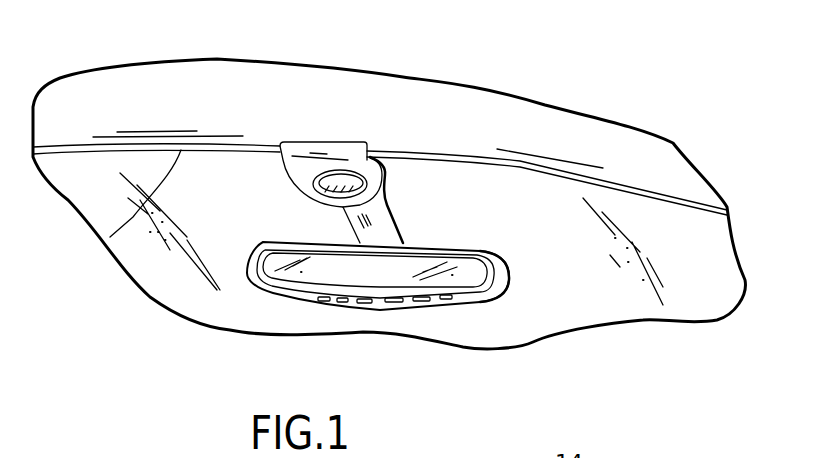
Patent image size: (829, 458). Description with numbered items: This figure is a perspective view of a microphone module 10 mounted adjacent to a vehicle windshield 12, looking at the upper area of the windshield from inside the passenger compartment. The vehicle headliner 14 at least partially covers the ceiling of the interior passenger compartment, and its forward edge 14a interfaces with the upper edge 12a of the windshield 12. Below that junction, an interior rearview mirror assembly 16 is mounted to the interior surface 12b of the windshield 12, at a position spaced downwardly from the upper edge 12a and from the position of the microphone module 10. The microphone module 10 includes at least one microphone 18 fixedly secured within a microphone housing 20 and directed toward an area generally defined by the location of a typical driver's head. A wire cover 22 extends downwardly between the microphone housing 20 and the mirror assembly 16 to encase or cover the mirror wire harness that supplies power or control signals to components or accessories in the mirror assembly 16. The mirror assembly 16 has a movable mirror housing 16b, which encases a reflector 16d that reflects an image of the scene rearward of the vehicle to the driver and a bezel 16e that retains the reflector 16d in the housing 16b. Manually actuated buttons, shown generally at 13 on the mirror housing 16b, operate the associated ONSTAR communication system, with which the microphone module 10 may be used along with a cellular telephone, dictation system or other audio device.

The microphone module 10 is at (373, 106).
The vehicle windshield 12 is at (107, 192).
The upper edge of windshield 12a is at (110, 237).
The interior surface of windshield 12b is at (714, 270).
The manually actuated buttons 13 is at (379, 324).
The headliner 14 is at (152, 103).
The forward edge of headliner 14a is at (203, 143).
The interior rearview mirror assembly 16 is at (272, 224).
The mirror housing 16b is at (511, 288).
The reflector 16d is at (472, 263).
The bezel 16e is at (498, 251).
The microphone 18 is at (350, 182).
The microphone housing 20 is at (431, 156).
The wire cover 22 is at (383, 220).